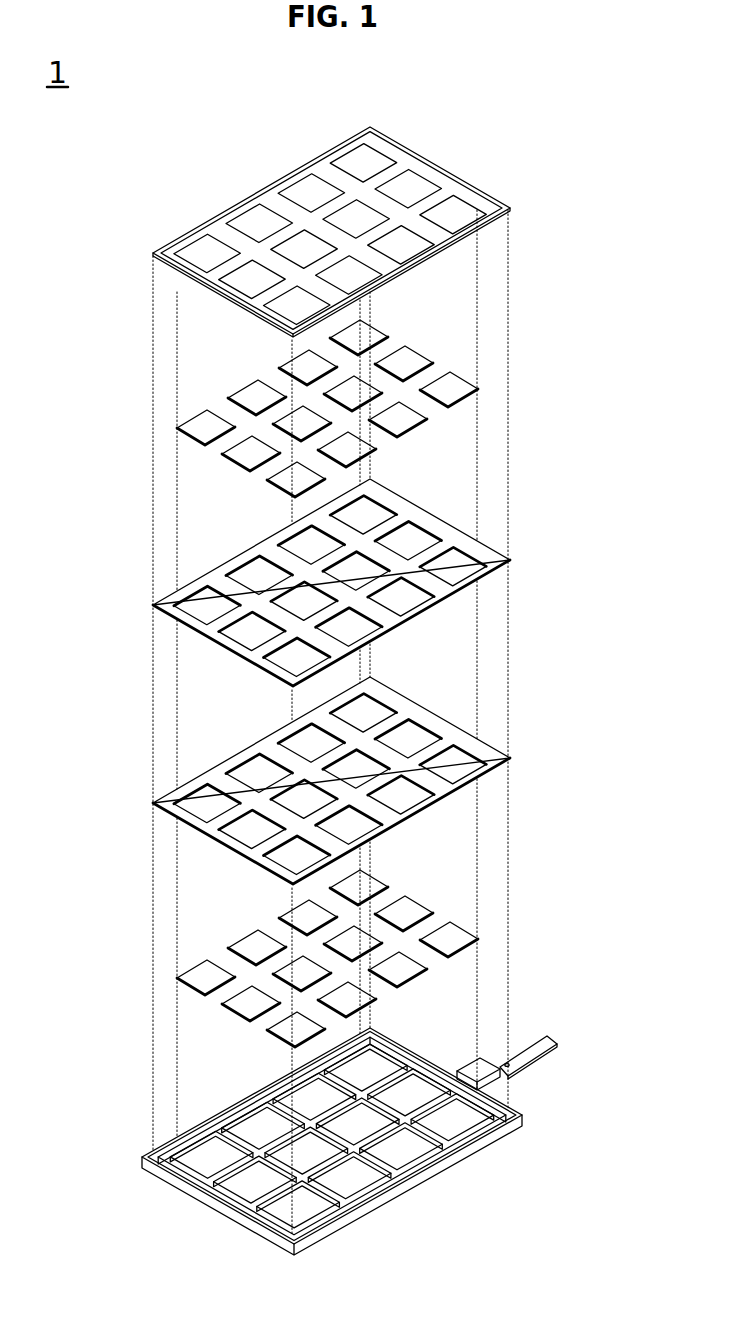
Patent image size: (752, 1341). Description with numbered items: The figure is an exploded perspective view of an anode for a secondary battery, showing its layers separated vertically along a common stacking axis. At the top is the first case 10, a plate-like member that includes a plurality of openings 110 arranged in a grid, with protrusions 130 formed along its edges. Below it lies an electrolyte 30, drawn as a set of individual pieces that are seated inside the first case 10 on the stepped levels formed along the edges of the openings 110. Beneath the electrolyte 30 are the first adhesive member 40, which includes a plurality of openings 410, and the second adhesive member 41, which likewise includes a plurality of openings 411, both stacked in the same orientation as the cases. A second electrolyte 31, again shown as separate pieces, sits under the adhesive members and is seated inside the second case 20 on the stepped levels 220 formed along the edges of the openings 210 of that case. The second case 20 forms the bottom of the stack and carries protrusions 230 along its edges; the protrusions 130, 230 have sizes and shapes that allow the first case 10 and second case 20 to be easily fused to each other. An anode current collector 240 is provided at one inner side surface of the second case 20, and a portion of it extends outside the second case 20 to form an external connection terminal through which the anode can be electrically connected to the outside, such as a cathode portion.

The first case 10 is at (356, 223).
The openings 110 is at (314, 195).
The protrusions 130 is at (200, 223).
The electrolyte 30 is at (425, 340).
The first adhesive member 40 is at (321, 567).
The openings 410 is at (261, 576).
The second adhesive member 41 is at (321, 765).
The openings 411 is at (261, 774).
The electrolyte 31 is at (423, 888).
The second case 20 is at (348, 1112).
The openings 210 is at (394, 1167).
The stepped level 220 is at (232, 1132).
The protrusions 230 is at (178, 1137).
The anode current collector 240 is at (528, 1062).